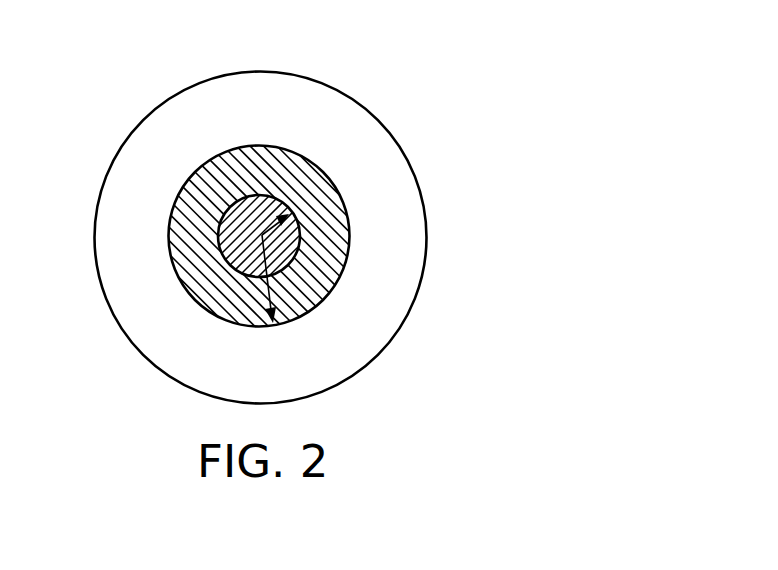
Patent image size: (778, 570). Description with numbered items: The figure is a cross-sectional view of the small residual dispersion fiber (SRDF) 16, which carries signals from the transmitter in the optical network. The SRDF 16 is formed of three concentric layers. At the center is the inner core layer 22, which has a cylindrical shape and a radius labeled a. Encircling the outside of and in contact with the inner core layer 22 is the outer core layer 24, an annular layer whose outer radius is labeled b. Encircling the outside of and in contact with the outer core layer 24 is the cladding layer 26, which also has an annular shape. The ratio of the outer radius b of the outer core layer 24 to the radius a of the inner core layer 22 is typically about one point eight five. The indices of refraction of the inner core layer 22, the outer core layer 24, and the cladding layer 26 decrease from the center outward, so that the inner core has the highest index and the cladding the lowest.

The small residual dispersion fiber 16 is at (95, 69).
The inner core layer 22 is at (296, 230).
The outer core layer 24 is at (327, 270).
The cladding layer 26 is at (355, 358).